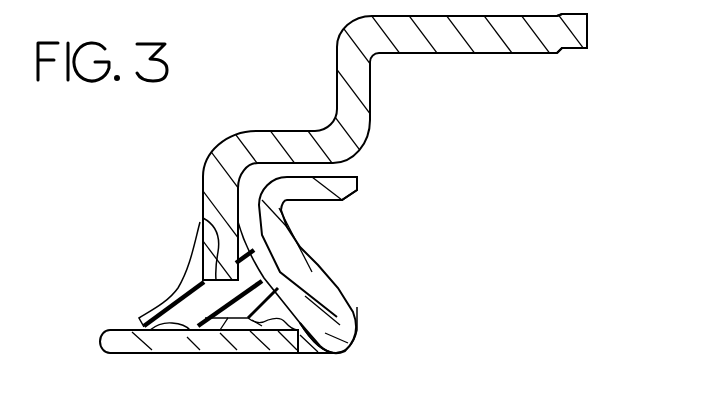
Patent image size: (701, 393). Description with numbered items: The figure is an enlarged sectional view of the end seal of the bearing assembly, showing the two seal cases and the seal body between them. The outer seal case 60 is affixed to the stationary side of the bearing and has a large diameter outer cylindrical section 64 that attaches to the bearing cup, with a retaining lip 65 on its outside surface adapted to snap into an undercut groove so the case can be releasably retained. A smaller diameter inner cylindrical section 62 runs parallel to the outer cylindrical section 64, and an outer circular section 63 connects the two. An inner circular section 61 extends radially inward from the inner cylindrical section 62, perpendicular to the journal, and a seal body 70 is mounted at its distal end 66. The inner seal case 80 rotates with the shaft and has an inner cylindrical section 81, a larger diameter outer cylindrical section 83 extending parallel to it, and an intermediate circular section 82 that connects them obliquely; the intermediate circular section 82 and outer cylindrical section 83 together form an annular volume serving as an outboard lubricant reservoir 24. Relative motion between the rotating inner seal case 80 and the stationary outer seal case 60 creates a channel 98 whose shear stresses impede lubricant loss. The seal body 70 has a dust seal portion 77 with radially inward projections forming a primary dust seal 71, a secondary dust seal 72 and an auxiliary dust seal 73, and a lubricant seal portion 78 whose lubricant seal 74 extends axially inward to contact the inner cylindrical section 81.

The outboard lubricant reservoir 24 is at (397, 256).
The outer seal case 60 is at (353, 33).
The inner circular section 61 is at (205, 196).
The inner cylindrical section 62 is at (289, 129).
The outer circular section 63 is at (338, 67).
The outer cylindrical section 64 is at (470, 18).
The retaining lip 65 is at (578, 14).
The distal end 66 is at (204, 219).
The seal body 70 is at (200, 256).
The primary dust seal 71 is at (150, 345).
The secondary dust seal 72 is at (183, 347).
The auxiliary dust seal 73 is at (242, 348).
The lubricant seal 74 is at (303, 355).
The dust seal portion 77 is at (172, 287).
The lubricant seal portion 78 is at (340, 298).
The inner seal case 80 is at (284, 204).
The inner cylindrical section 81 is at (112, 338).
The intermediate circular section 82 is at (284, 280).
The outer cylindrical section 83 is at (330, 207).
The channel 98 is at (346, 165).